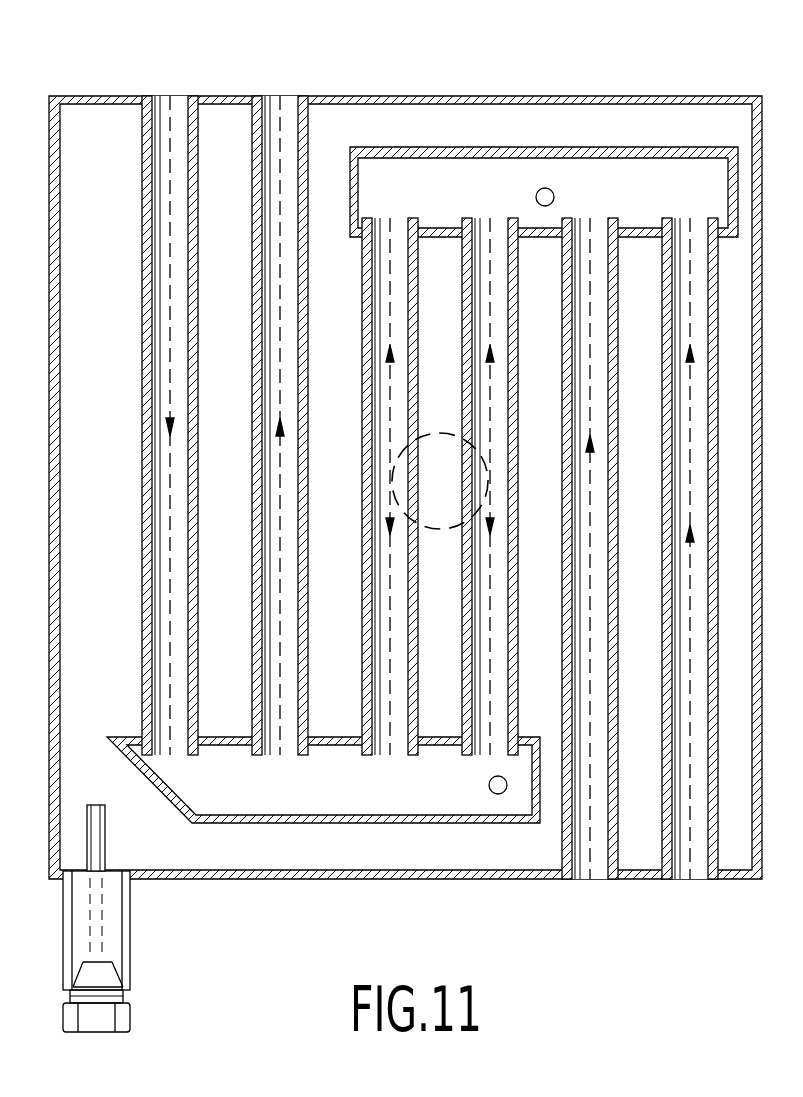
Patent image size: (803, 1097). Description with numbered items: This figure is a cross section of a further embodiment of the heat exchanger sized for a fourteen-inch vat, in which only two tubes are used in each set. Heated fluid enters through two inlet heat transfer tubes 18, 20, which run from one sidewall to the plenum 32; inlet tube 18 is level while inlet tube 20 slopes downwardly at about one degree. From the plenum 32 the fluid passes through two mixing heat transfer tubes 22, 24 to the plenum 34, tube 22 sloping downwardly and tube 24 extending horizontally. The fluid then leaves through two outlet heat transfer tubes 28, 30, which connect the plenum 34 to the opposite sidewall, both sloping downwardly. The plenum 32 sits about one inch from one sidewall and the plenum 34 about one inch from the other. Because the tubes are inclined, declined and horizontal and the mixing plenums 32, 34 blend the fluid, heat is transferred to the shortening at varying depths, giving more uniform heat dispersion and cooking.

The inlet heat transfer tube 18 is at (697, 872).
The inlet heat transfer tube 20 is at (598, 868).
The mixing heat transfer tube 22 is at (547, 546).
The mixing heat transfer tube 24 is at (398, 648).
The outlet heat transfer tube 28 is at (172, 105).
The outlet heat transfer tube 30 is at (287, 100).
The plenum 32 is at (603, 185).
The plenum 34 is at (354, 826).